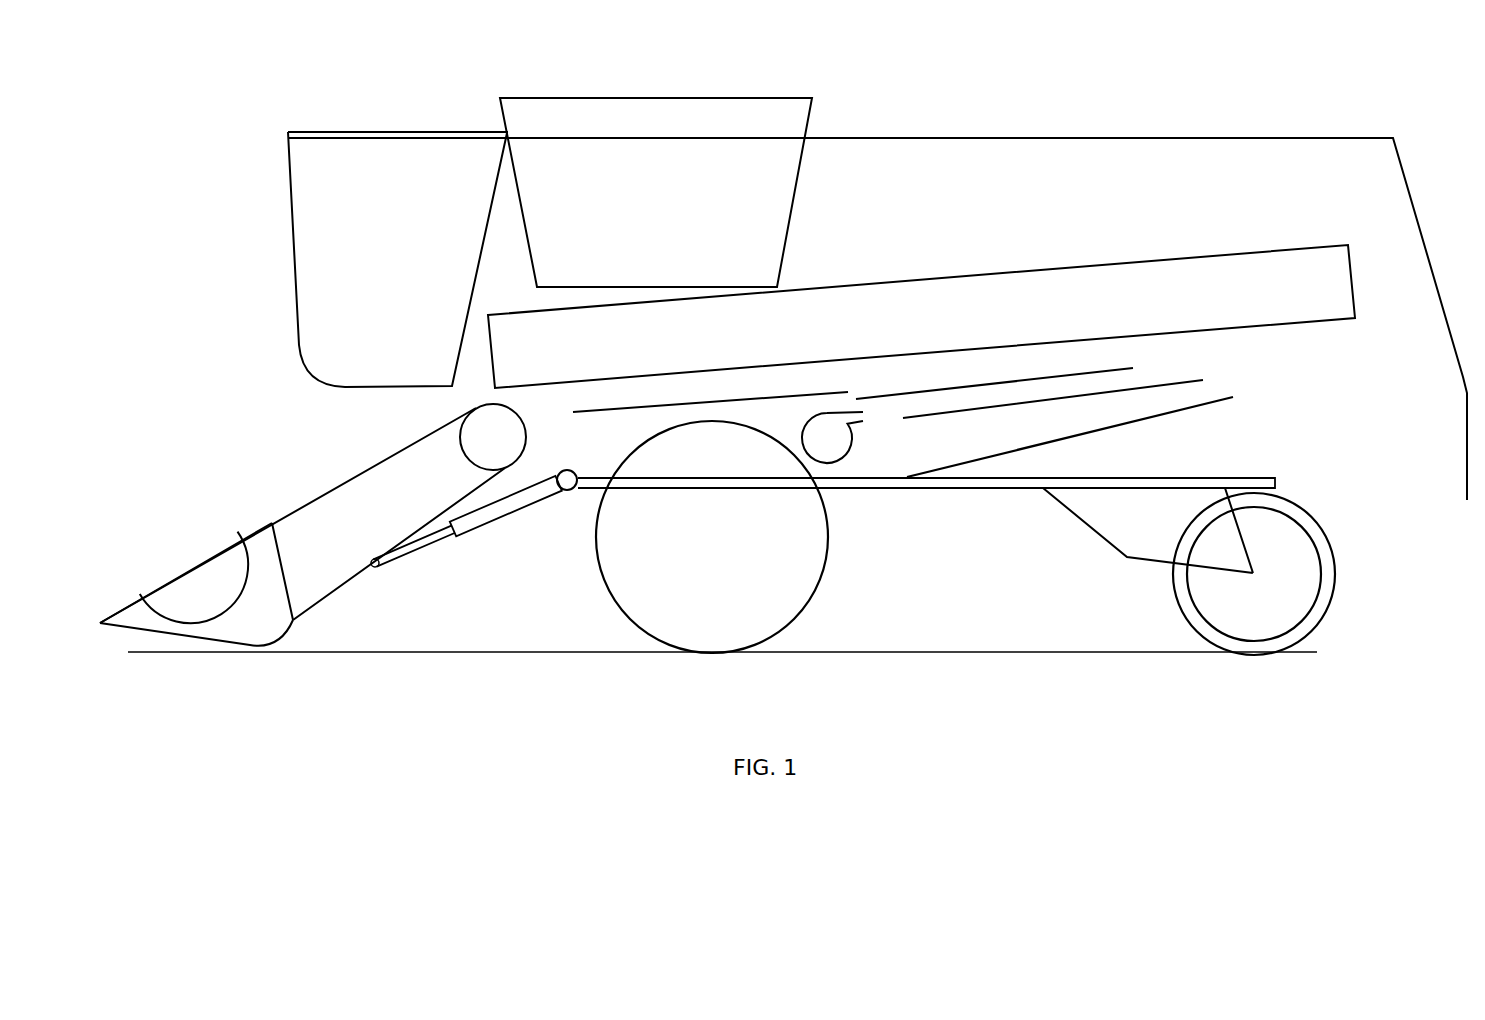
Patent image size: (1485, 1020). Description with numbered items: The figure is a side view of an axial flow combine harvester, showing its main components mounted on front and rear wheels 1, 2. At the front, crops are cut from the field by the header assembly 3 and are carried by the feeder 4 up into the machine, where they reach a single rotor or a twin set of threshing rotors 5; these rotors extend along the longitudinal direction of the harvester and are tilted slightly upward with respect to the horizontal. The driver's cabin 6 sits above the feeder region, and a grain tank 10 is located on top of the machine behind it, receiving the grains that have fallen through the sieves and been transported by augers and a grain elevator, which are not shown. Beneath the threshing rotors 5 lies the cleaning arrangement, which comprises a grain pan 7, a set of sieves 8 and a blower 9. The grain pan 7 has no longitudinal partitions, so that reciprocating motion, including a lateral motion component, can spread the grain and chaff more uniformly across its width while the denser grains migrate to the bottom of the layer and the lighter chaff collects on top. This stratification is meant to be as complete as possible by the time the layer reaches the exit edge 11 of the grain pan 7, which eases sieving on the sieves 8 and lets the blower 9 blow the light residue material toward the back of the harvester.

The front wheels 1 is at (793, 592).
The rear wheels 2 is at (1297, 580).
The header assembly 3 is at (233, 605).
The feeder 4 is at (340, 520).
The threshing rotors 5 is at (1042, 285).
The driver's cabin 6 is at (313, 237).
The grain pan 7 is at (623, 410).
The sieves 8 is at (1093, 363).
The blower 9 is at (827, 445).
The grain tank 10 is at (745, 180).
The exit edge 11 is at (847, 393).